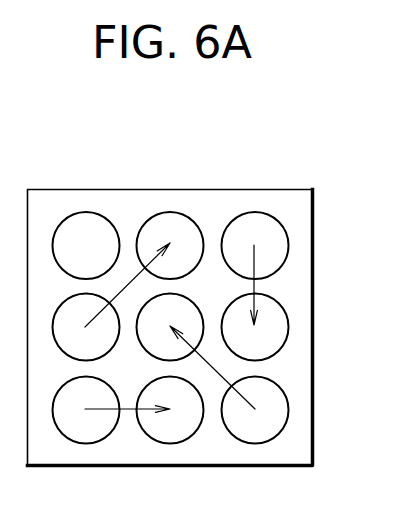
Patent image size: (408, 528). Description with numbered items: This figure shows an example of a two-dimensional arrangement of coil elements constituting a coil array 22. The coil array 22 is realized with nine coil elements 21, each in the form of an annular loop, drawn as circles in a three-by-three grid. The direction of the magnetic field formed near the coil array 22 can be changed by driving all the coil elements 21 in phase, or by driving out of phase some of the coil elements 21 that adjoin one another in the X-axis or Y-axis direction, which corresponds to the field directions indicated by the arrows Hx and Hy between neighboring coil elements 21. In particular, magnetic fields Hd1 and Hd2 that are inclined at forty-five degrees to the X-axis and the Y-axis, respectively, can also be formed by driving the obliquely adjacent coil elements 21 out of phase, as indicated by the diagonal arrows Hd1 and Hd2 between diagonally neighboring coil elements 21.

The coil element 21 is at (82, 222).
The coil array 22 is at (217, 206).
The magnetic field inclined at 45 degrees Hd1 is at (127, 284).
The magnetic field inclined at 45 degrees Hd2 is at (215, 367).
The hole pitch in x direction Hx is at (127, 410).
The hole pitch in y direction Hy is at (253, 283).